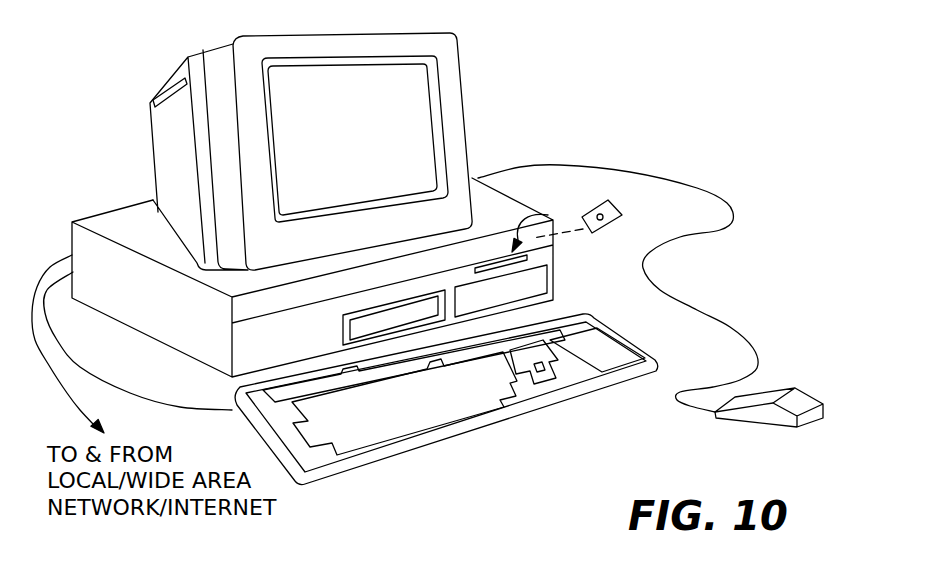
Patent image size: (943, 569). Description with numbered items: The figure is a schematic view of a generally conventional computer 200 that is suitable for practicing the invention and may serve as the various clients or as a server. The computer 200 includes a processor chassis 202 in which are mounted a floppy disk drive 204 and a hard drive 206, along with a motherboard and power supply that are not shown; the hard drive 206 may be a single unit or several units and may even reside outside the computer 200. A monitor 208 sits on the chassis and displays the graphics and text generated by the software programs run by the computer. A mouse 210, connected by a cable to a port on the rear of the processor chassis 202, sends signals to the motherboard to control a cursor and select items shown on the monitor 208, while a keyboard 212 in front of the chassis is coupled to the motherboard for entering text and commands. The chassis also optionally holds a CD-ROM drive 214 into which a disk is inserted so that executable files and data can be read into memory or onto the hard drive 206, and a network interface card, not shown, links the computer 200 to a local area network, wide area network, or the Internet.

The computer 200 is at (465, 460).
The processor chassis 202 is at (558, 246).
The floppy disk drive 204 is at (554, 216).
The hard drive 206 is at (522, 286).
The monitor 208 is at (458, 97).
The mouse 210 is at (800, 428).
The keyboard 212 is at (540, 415).
The compact disk-read only memory (CD-ROM) drive 214 is at (343, 331).